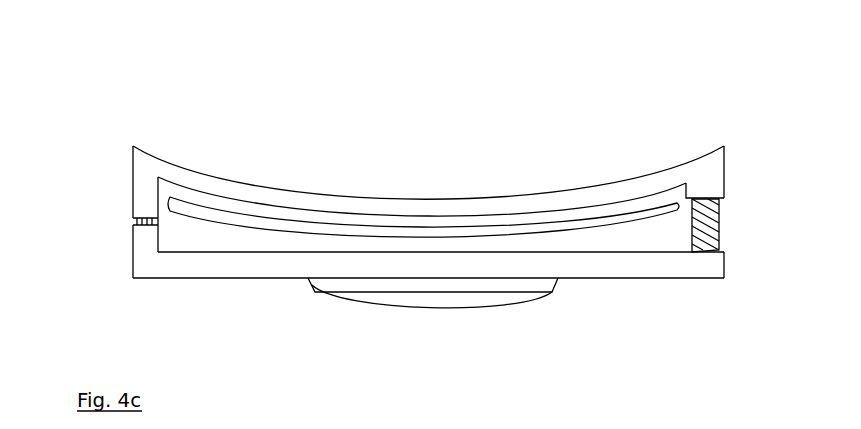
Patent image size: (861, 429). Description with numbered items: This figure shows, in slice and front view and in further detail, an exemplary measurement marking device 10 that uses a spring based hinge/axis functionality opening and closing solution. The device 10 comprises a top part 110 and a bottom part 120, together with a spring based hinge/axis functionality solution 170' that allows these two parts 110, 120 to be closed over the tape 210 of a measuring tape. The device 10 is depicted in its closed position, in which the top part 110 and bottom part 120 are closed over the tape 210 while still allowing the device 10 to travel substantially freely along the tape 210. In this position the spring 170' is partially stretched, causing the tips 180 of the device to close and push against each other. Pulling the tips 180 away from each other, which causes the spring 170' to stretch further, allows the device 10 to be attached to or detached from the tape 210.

The measurement marking device 10 is at (114, 120).
The top part 110 is at (373, 198).
The bottom part 120 is at (635, 286).
The spring based hinge/axis functionality solution 170' is at (755, 185).
The tips of the device 180 is at (118, 223).
The tape 210 is at (258, 230).